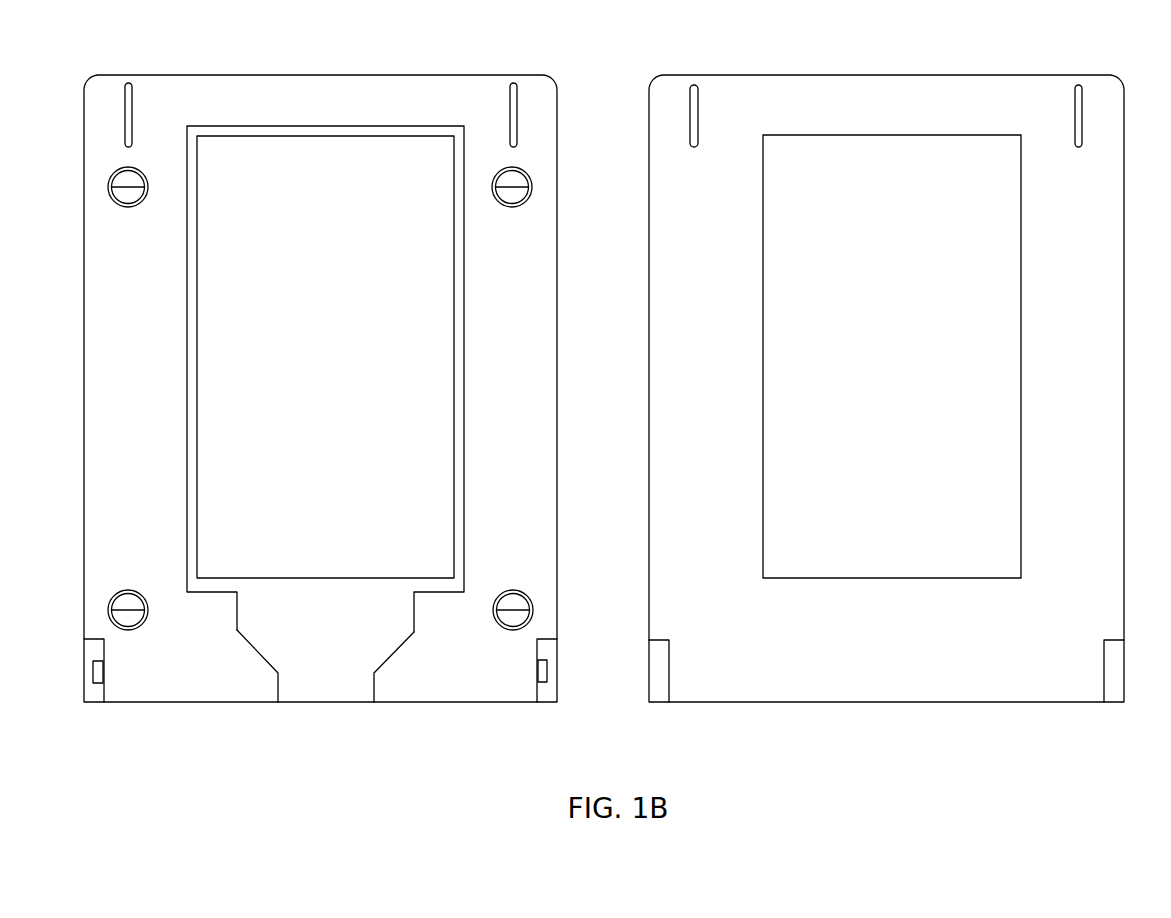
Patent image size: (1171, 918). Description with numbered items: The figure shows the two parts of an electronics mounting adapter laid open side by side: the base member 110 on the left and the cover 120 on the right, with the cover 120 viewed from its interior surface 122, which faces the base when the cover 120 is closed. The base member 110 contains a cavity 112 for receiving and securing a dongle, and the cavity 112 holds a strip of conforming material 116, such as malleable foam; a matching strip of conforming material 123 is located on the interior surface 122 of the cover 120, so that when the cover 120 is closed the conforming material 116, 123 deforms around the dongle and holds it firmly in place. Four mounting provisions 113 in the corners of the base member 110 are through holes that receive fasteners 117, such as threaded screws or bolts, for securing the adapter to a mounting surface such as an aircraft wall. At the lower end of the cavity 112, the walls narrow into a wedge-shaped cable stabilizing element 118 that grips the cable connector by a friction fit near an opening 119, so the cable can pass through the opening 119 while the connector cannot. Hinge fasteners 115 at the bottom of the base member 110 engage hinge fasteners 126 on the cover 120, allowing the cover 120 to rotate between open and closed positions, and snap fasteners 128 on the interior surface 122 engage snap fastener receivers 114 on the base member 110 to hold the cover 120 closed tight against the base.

The base member 110 is at (321, 75).
The cavity 112 is at (186, 382).
The mounting provisions 113 is at (107, 187).
The snap fastener receivers 114 is at (128, 82).
The hinge fasteners 115 is at (97, 684).
The conforming material 116 is at (306, 369).
The fasteners 117 is at (129, 198).
The cable stabilizing element 118 is at (256, 652).
The opening 119 is at (320, 708).
The cover 120 is at (885, 75).
The interior surface 122 is at (865, 119).
The conforming material 123 is at (870, 369).
The hinge fasteners 126 is at (659, 704).
The snap fasteners 128 is at (694, 84).